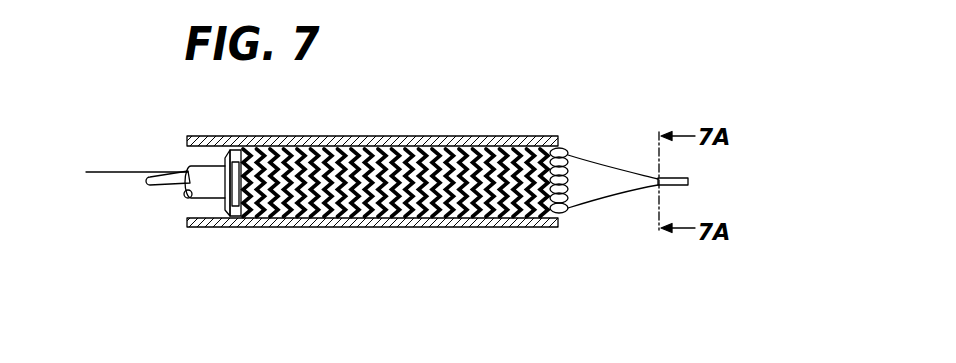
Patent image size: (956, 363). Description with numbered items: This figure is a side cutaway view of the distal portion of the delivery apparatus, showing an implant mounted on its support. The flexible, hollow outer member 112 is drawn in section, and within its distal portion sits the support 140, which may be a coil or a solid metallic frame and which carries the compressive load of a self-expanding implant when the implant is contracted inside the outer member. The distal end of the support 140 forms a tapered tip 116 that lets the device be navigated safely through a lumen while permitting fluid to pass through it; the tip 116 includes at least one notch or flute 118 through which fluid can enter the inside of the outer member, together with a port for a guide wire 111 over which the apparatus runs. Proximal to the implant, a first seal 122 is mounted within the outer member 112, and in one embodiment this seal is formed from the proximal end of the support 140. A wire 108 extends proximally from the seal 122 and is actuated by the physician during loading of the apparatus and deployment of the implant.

The wire 108 is at (110, 172).
The guide wire 111 is at (682, 187).
The outer member 112 is at (375, 137).
The tip 116 is at (625, 188).
The notch or flute 118 is at (575, 162).
The first seal 122 is at (214, 233).
The support 140 is at (315, 218).